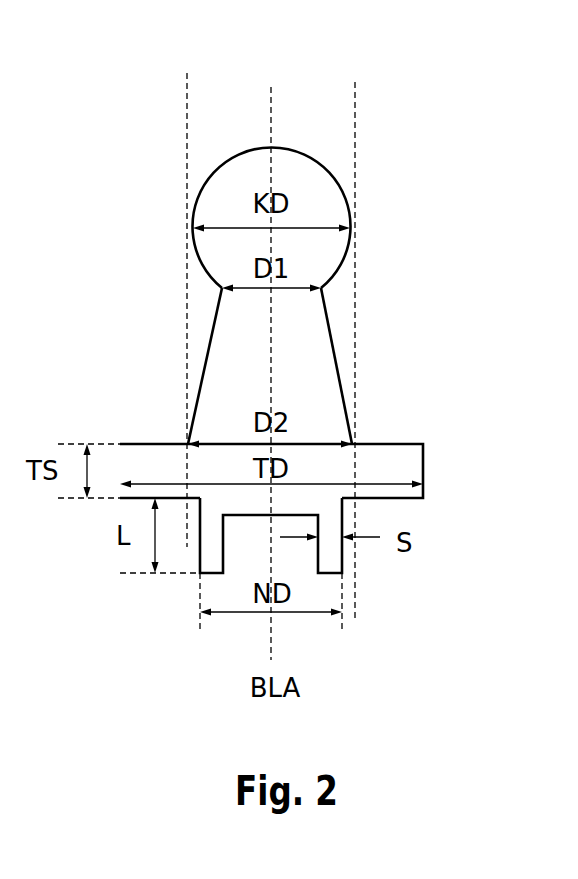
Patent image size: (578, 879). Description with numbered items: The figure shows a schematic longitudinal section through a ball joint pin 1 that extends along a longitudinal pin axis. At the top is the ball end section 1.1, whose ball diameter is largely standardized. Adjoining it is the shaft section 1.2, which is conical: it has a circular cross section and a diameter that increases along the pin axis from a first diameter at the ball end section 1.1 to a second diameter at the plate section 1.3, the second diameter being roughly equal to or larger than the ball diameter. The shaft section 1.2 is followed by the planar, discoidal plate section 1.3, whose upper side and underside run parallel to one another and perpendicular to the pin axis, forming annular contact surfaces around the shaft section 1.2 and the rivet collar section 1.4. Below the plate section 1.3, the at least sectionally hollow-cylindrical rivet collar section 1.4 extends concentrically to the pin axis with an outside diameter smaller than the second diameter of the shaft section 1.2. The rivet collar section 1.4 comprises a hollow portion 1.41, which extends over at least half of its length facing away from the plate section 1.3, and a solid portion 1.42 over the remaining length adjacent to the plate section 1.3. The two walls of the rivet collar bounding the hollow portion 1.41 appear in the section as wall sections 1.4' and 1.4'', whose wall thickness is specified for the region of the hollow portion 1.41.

The ball joint pin 1 is at (370, 127).
The ball end section 1.1 is at (315, 227).
The shaft section 1.2 is at (313, 330).
The plate section 1.3 is at (403, 462).
The rivet collar section 1.4 is at (341, 555).
The first collar wall section 1.4' is at (170, 589).
The second collar wall section 1.4'' is at (382, 589).
The hollow portion 1.41 is at (290, 562).
The solid portion 1.42 is at (293, 497).